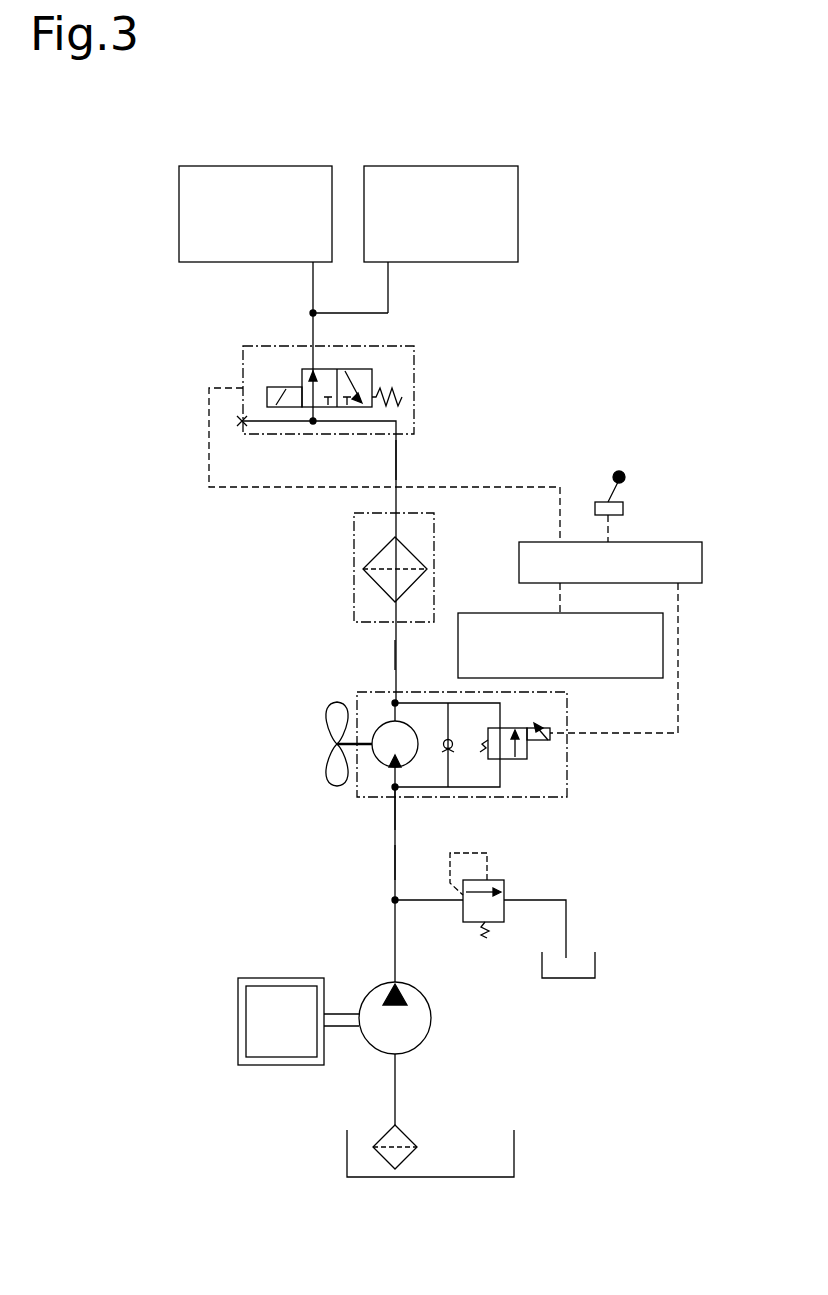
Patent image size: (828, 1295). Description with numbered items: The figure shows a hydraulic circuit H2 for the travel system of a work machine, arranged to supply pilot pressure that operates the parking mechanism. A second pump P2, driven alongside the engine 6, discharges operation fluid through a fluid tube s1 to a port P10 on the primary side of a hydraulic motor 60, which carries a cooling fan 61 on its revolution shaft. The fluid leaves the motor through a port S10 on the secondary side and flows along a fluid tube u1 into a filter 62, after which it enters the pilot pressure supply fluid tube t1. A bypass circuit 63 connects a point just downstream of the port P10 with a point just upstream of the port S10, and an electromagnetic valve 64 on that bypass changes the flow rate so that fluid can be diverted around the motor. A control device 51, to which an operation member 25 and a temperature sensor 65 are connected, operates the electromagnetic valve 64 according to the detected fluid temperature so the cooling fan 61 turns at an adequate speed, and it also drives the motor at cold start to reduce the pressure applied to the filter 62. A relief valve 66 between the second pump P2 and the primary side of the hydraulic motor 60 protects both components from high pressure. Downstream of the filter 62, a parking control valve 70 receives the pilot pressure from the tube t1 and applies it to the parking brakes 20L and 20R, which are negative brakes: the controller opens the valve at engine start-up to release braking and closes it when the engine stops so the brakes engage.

The parking brake 20L is at (217, 166).
The parking brake 20R is at (404, 166).
The parking control valve 70 is at (360, 362).
The pilot pressure supply fluid tube t1 is at (396, 459).
The filter 62 is at (354, 536).
The control device 51 is at (519, 556).
The operation member 25 is at (623, 508).
The temperature sensor 65 is at (623, 678).
The fluid tube u1 is at (395, 656).
The port S10 is at (436, 739).
The bypass circuit 63 is at (462, 787).
The electromagnetic valve 64 is at (530, 760).
The hydraulic motor 60 is at (376, 764).
The cooling fan 61 is at (328, 728).
The port P10 is at (400, 790).
The fluid tube s1 is at (395, 862).
The relief valve 66 is at (463, 916).
The engine 6 is at (265, 978).
The second pump P2 is at (370, 990).
The hydraulic circuit H2 is at (602, 362).